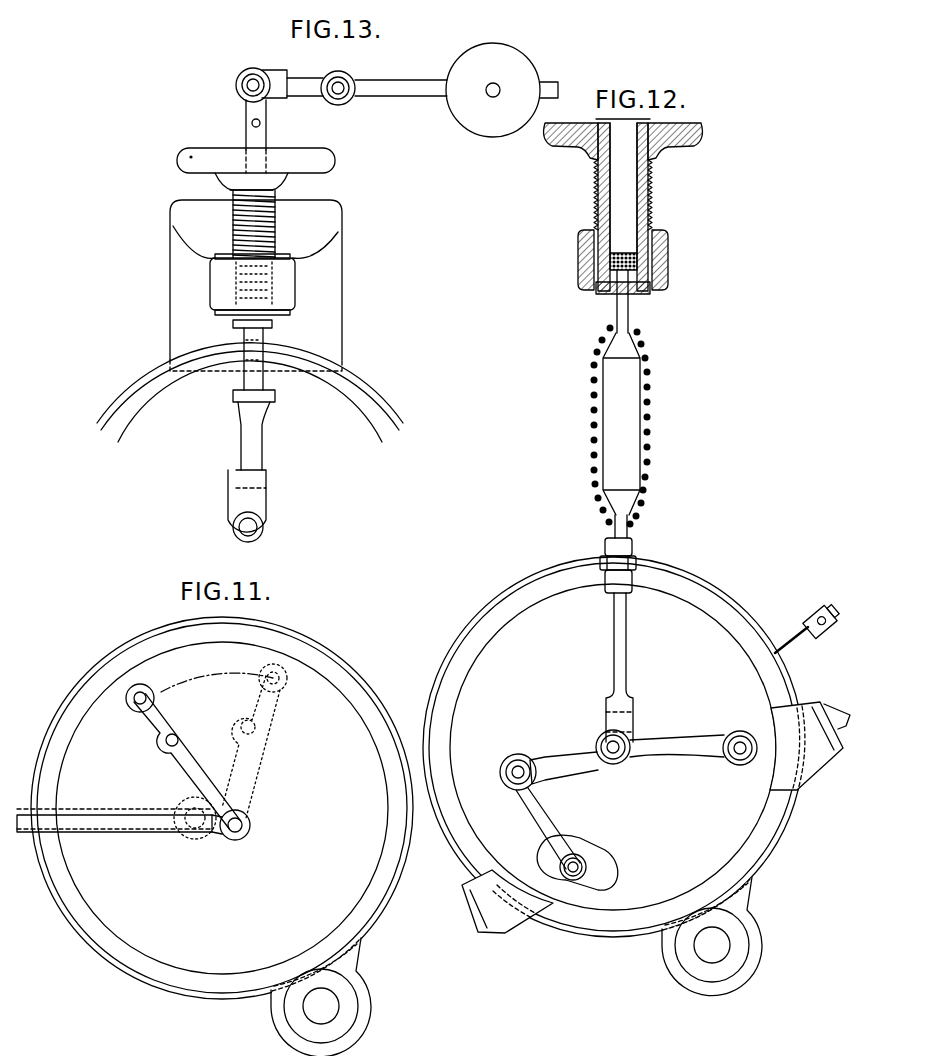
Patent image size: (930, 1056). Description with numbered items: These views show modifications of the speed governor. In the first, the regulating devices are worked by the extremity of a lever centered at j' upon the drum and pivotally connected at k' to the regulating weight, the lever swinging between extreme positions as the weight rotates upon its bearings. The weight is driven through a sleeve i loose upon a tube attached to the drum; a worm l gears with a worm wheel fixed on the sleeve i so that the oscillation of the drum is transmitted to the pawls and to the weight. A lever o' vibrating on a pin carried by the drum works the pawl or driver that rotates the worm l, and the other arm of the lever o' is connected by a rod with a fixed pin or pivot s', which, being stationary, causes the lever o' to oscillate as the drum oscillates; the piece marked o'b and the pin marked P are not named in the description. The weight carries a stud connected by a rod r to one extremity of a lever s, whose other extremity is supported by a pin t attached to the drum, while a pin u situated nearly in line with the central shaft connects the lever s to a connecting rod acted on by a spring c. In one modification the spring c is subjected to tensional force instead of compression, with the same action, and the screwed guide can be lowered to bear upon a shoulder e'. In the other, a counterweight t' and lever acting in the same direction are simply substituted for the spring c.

In FIG. 13, the counterweight t' is at (397, 90).
In FIG. 12, the lever o' is at (630, 226).
In FIG. 13, the lever o' is at (256, 179).
In FIG. 12, the T-handle (side fitting) o'b is at (808, 627).
In FIG. 13, the shoulder e' is at (266, 430).
In FIG. 13, the pin u is at (256, 527).
In FIG. 12, the spring c is at (626, 426).
In FIG. 12, the worm l is at (840, 707).
In FIG. 12, the lever s is at (549, 768).
In FIG. 12, the fixed pin or pivot s' is at (677, 746).
In FIG. 12, the pin t is at (740, 763).
In FIG. 12, the rod r is at (548, 828).
In FIG. 12, the pin P is at (577, 870).
In FIG. 11, the sleeve i is at (210, 752).
In FIG. 11, the pivotal connection k' is at (146, 688).
In FIG. 11, the lever center j' is at (182, 728).